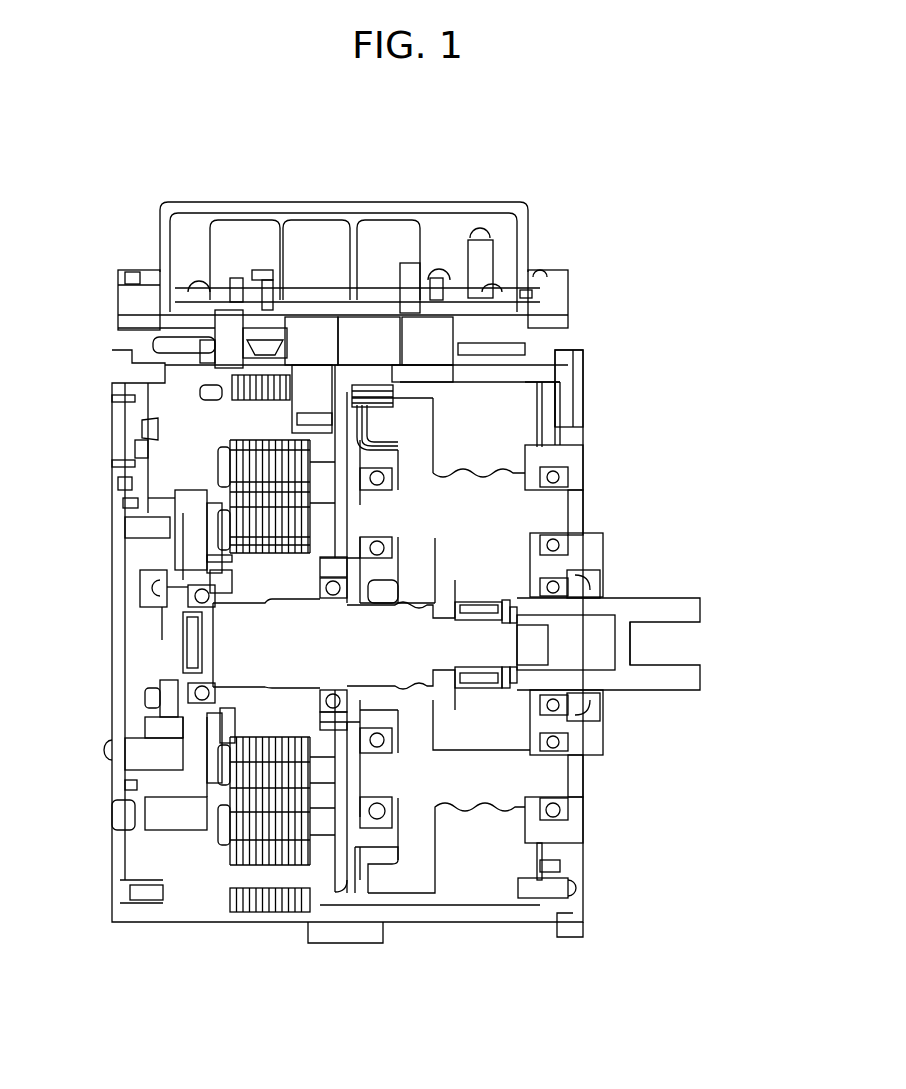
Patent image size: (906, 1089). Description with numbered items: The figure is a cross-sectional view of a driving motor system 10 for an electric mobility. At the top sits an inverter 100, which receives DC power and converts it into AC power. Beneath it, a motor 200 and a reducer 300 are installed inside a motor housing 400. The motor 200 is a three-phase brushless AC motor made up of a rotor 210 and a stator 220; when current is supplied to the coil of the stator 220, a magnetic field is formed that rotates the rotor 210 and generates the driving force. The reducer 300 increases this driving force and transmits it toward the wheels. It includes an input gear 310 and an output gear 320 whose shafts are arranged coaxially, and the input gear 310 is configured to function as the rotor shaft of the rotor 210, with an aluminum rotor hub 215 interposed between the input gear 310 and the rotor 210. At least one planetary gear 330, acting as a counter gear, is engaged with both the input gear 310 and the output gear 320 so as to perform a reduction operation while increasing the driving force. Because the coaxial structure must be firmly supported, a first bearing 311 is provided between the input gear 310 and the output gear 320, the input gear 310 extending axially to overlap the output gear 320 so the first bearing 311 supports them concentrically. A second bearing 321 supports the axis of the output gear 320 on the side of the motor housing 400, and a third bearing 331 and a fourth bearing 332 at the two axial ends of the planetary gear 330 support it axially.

The driving motor system 10 is at (354, 167).
The inverter 100 is at (530, 242).
The motor 200 is at (180, 416).
The rotor 210 is at (222, 773).
The rotor hub 215 is at (218, 708).
The stator 220 is at (228, 882).
The reducer 300 is at (710, 594).
The input gear 310 is at (230, 641).
The first bearing 311 is at (520, 690).
The output gear 320 is at (700, 678).
The second bearing 321 is at (560, 700).
The planetary gear 330 is at (415, 872).
The third bearing 331 is at (562, 808).
The fourth bearing 332 is at (377, 822).
The motor housing 400 is at (565, 408).